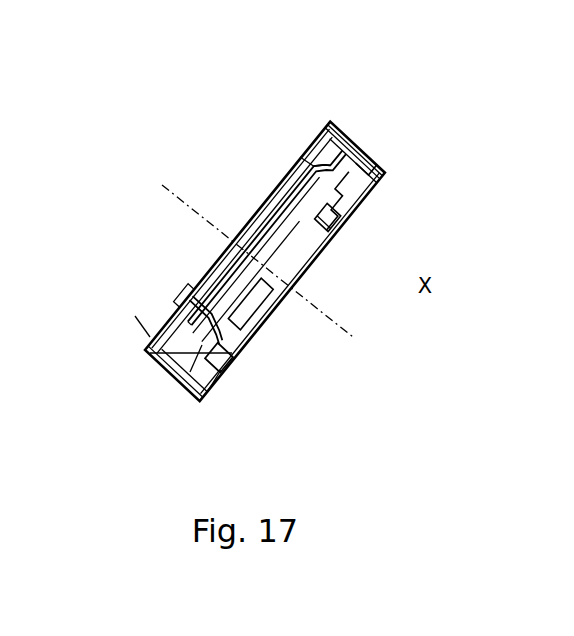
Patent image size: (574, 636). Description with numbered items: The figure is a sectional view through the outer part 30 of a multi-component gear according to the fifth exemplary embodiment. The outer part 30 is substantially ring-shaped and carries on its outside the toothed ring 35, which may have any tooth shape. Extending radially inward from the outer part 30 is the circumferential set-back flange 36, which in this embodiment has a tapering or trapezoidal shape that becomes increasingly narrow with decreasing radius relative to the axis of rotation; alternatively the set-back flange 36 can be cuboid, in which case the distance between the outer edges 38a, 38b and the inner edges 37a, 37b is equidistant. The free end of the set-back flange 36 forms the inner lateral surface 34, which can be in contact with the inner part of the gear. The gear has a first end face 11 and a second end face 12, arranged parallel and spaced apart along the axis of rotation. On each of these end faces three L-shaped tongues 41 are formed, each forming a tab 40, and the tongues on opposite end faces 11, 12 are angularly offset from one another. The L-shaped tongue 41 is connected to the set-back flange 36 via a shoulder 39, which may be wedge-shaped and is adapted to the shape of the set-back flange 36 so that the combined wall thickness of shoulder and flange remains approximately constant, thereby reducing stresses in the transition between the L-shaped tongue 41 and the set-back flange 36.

The outer part 30 is at (168, 100).
The first end face 11 is at (148, 338).
The second end face 12 is at (220, 377).
The inner lateral surface 34 is at (240, 312).
The toothed ring 35 is at (346, 135).
The set-back flange 36 is at (372, 172).
The inner edge 37a is at (295, 176).
The inner edge 37b is at (358, 195).
The outer edge 38a is at (326, 156).
The outer edge 38b is at (380, 180).
The shoulder 39 is at (300, 158).
The tab 40 is at (213, 278).
The L-shaped tongue 41 is at (192, 298).